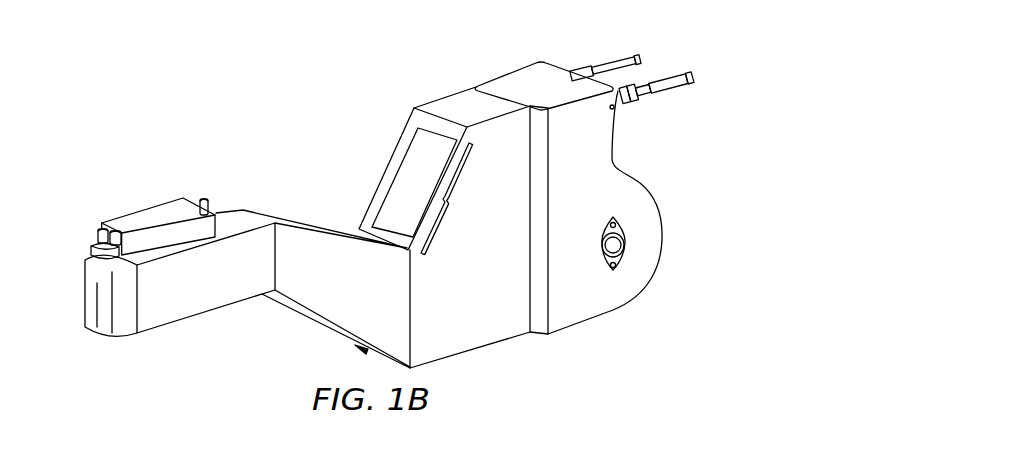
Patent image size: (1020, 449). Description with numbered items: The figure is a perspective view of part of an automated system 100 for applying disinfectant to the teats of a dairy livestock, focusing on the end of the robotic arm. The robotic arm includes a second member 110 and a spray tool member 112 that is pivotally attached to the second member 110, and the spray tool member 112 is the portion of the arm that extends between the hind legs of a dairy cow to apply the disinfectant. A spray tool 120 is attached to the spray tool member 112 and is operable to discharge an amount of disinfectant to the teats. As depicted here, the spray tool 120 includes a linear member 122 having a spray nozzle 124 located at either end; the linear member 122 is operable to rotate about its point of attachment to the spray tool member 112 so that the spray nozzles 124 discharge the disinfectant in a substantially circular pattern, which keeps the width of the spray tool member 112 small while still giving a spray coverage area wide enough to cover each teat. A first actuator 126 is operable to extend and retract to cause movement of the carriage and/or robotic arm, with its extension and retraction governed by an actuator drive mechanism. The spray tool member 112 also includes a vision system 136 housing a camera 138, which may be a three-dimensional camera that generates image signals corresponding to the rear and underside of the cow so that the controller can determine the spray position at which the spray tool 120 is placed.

The automated system 100 is at (318, 94).
The second member 110 is at (585, 345).
The spray tool member 112 is at (505, 352).
The spray tool 120 is at (212, 171).
The linear member 122 is at (163, 235).
The spray nozzle 124 is at (98, 232).
The first actuator 126 is at (615, 60).
The vision system 136 is at (451, 201).
The camera 138 is at (402, 188).